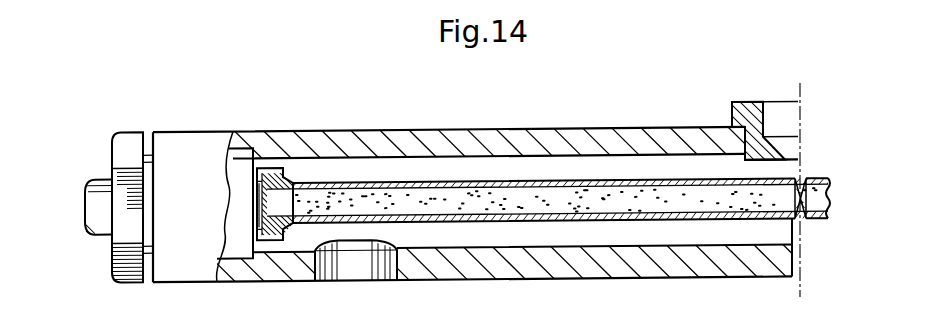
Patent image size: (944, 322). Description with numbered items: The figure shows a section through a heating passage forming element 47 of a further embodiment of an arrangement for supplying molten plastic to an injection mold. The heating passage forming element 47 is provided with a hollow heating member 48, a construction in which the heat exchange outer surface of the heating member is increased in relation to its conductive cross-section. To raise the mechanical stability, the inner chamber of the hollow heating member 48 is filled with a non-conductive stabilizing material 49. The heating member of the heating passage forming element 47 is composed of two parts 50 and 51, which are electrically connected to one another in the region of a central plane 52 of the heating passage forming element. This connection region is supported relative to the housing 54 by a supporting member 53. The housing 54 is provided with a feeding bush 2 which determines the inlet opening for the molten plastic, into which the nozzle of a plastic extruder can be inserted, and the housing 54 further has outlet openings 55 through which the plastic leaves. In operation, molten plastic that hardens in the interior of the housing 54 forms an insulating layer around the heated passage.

The feeding bush 2 is at (742, 113).
The heating passage forming element 47 is at (530, 129).
The hollow heating member 48 is at (431, 182).
The non-conductive stabilizing material 49 is at (318, 200).
The first part of heating member 50 is at (617, 183).
The second part of heating member 51 is at (817, 179).
The central plane 52 is at (802, 93).
The supporting member 53 is at (790, 237).
The housing 54 is at (645, 262).
The outlet openings 55 is at (360, 263).